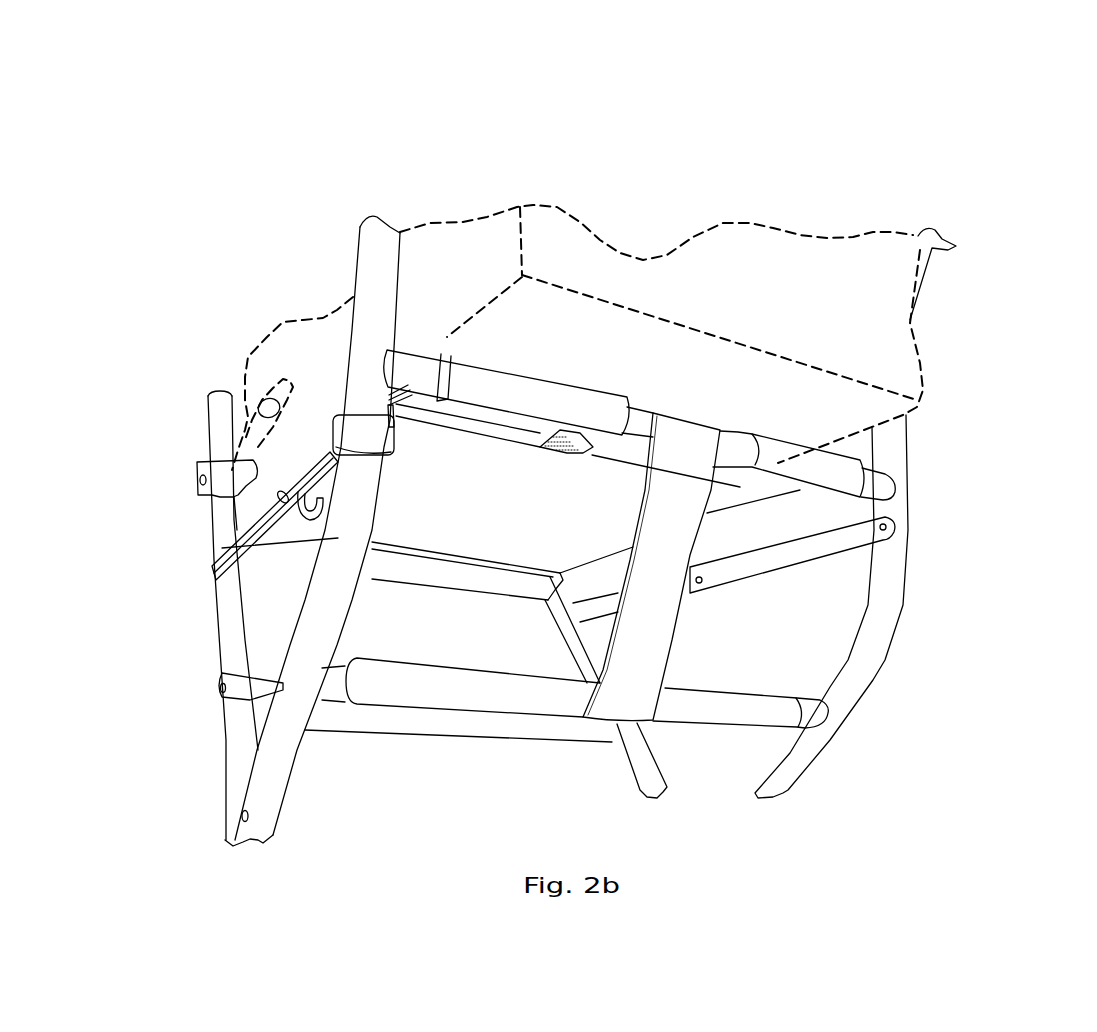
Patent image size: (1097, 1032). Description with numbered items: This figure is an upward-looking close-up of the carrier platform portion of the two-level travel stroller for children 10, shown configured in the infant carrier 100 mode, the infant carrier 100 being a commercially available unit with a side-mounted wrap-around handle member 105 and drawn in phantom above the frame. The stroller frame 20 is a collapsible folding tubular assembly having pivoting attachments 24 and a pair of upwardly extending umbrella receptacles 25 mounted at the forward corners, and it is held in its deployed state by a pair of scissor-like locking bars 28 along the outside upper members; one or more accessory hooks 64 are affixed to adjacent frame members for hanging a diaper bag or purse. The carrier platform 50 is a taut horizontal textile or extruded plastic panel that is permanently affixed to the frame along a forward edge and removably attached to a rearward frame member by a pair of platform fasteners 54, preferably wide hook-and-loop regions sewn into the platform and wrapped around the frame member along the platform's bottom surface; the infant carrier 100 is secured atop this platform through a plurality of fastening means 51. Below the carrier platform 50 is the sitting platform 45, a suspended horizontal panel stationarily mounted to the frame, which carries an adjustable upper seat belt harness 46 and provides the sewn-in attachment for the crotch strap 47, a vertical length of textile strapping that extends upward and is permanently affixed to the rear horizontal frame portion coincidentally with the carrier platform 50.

The two-level travel stroller for children 10 is at (1009, 205).
The stroller frame 20 is at (367, 262).
The pivoting attachments 24 is at (243, 817).
The umbrella receptacles 25 is at (208, 455).
The locking bars 28 is at (336, 454).
The sitting platform 45 is at (432, 723).
The adjustable upper seat belt harness 46 is at (220, 686).
The crotch strap 47 is at (660, 632).
The carrier platform 50 is at (432, 472).
The fastening means 51 is at (197, 478).
The platform fastener 54 is at (543, 450).
The accessory hooks 64 is at (332, 455).
The infant carrier 100 is at (285, 365).
The wrap-around handle member 105 is at (247, 442).